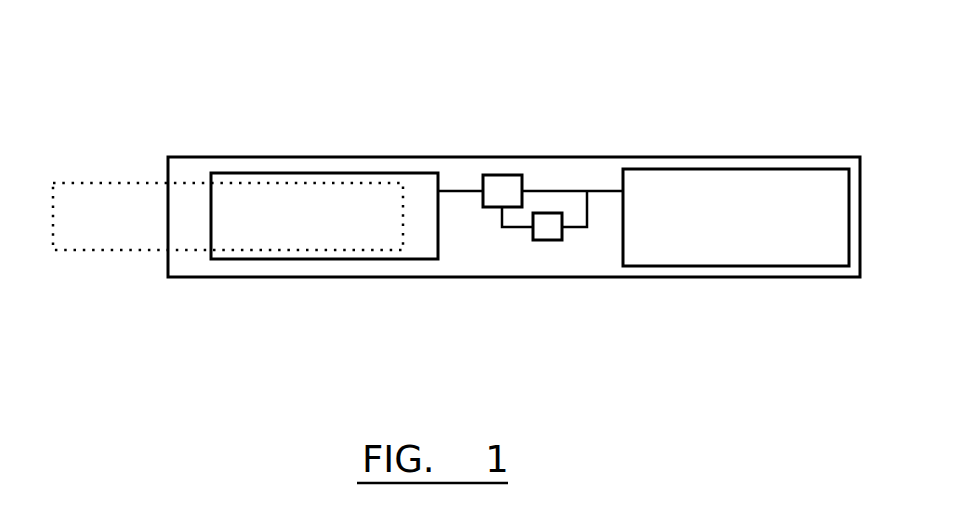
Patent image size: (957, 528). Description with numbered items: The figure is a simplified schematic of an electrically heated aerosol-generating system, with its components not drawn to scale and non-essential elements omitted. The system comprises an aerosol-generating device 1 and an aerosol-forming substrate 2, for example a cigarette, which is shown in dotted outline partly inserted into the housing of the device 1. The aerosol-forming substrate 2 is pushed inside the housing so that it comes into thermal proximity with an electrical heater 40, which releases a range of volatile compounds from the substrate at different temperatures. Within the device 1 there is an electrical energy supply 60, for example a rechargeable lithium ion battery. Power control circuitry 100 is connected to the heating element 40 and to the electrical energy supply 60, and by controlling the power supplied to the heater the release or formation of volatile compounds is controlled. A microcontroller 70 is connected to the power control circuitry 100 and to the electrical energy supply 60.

The aerosol-generating device 1 is at (225, 117).
The aerosol-forming substrate 2 is at (132, 229).
The electrical heater 40 is at (422, 190).
The electrical energy supply 60 is at (733, 197).
The microcontroller 70 is at (543, 232).
The power control circuitry 100 is at (502, 188).